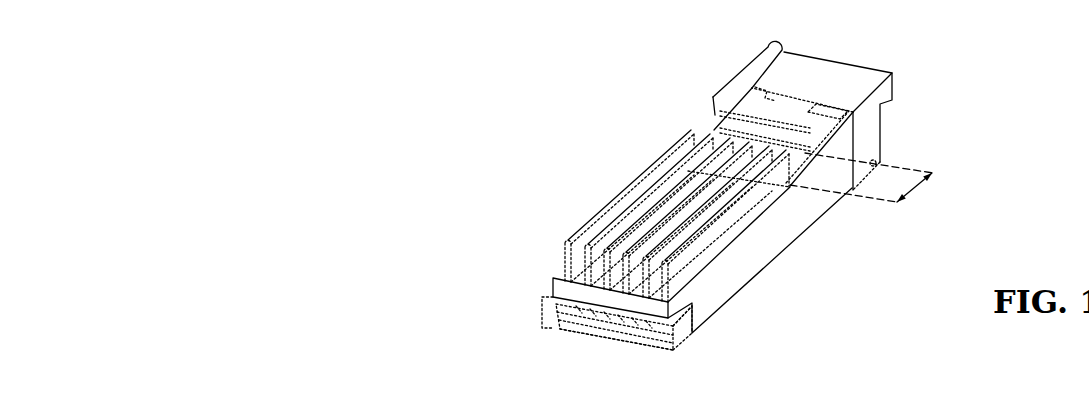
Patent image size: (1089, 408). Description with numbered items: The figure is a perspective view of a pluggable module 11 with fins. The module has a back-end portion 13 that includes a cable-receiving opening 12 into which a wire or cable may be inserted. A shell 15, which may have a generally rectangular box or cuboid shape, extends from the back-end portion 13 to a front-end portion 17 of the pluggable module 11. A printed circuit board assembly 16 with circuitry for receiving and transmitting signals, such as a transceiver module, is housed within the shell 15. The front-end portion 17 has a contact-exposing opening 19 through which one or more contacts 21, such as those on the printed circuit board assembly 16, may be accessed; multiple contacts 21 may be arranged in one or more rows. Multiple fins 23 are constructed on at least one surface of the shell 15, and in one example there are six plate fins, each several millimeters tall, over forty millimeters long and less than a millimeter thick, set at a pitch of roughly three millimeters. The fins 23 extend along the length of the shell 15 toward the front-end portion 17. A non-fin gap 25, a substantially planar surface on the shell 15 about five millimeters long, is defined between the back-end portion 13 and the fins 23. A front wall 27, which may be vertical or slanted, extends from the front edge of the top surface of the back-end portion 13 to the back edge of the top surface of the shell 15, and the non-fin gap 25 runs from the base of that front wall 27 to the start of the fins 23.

The pluggable module 11 is at (588, 147).
The cable-receiving opening 12 is at (898, 102).
The back-end portion 13 is at (712, 97).
The shell 15 is at (760, 263).
The printed circuit board assembly 16 is at (570, 313).
The front-end portion 17 is at (600, 353).
The contact-exposing opening 19 is at (540, 313).
The contacts 21 is at (658, 328).
The fins 23 is at (665, 260).
The non-fin gap 25 is at (913, 190).
The front wall 27 is at (713, 117).